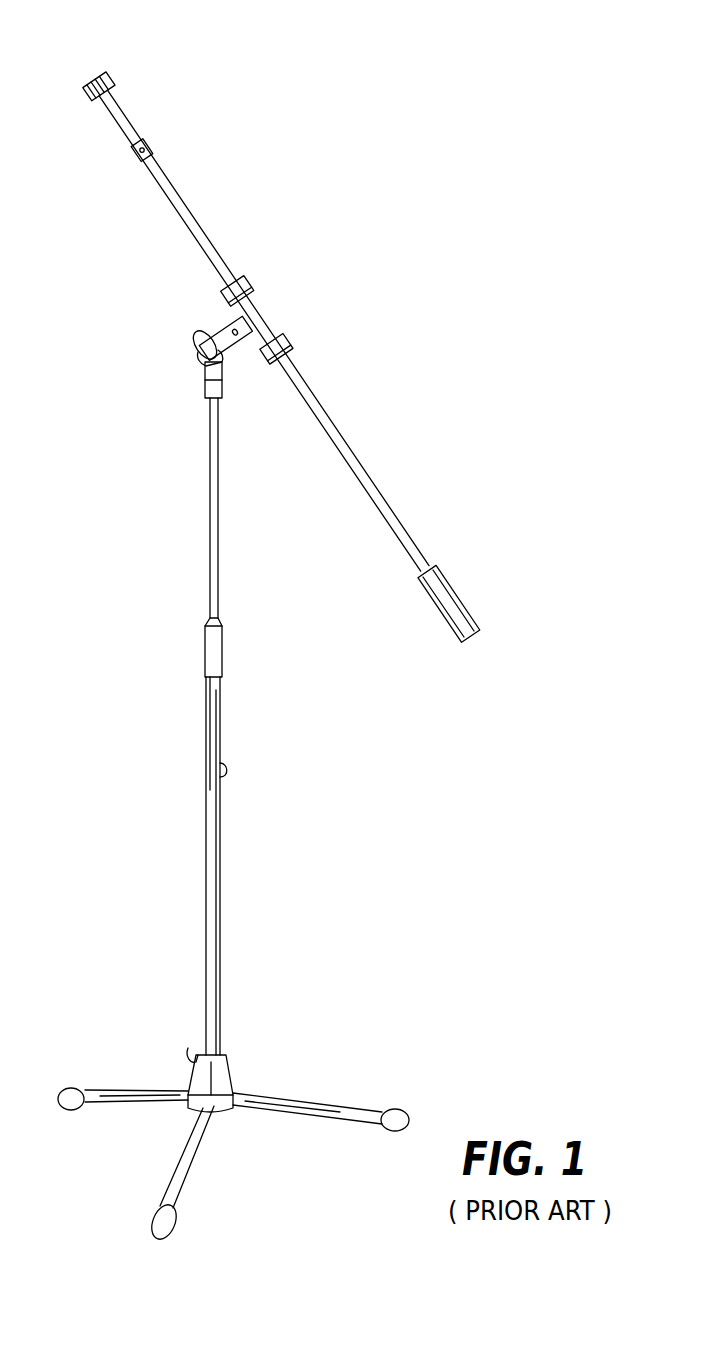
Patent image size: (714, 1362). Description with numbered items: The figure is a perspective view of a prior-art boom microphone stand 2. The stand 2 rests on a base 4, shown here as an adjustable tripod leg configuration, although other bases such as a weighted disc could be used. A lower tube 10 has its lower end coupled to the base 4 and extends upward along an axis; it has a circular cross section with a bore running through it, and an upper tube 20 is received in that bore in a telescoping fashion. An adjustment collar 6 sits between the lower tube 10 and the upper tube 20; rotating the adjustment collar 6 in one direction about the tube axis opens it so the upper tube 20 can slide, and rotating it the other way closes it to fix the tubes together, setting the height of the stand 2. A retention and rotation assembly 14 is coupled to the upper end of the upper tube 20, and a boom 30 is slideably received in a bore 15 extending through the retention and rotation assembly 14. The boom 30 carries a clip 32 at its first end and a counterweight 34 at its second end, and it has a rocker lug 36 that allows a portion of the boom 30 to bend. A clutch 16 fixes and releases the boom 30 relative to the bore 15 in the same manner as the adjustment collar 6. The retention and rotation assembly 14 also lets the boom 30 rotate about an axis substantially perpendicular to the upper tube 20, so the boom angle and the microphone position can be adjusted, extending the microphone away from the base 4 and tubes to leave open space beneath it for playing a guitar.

The boom microphone stand 2 is at (168, 556).
The base 4 is at (190, 1060).
The adjustment collar 6 is at (206, 672).
The lower tube 10 is at (206, 832).
The retention and rotation assembly 14 is at (200, 334).
The bore 15 is at (266, 322).
The clutch 16 is at (237, 276).
The upper tube 20 is at (209, 473).
The boom 30 is at (320, 404).
The clip 32 is at (103, 77).
The counterweight 34 is at (452, 594).
The rocker lug 36 is at (149, 148).